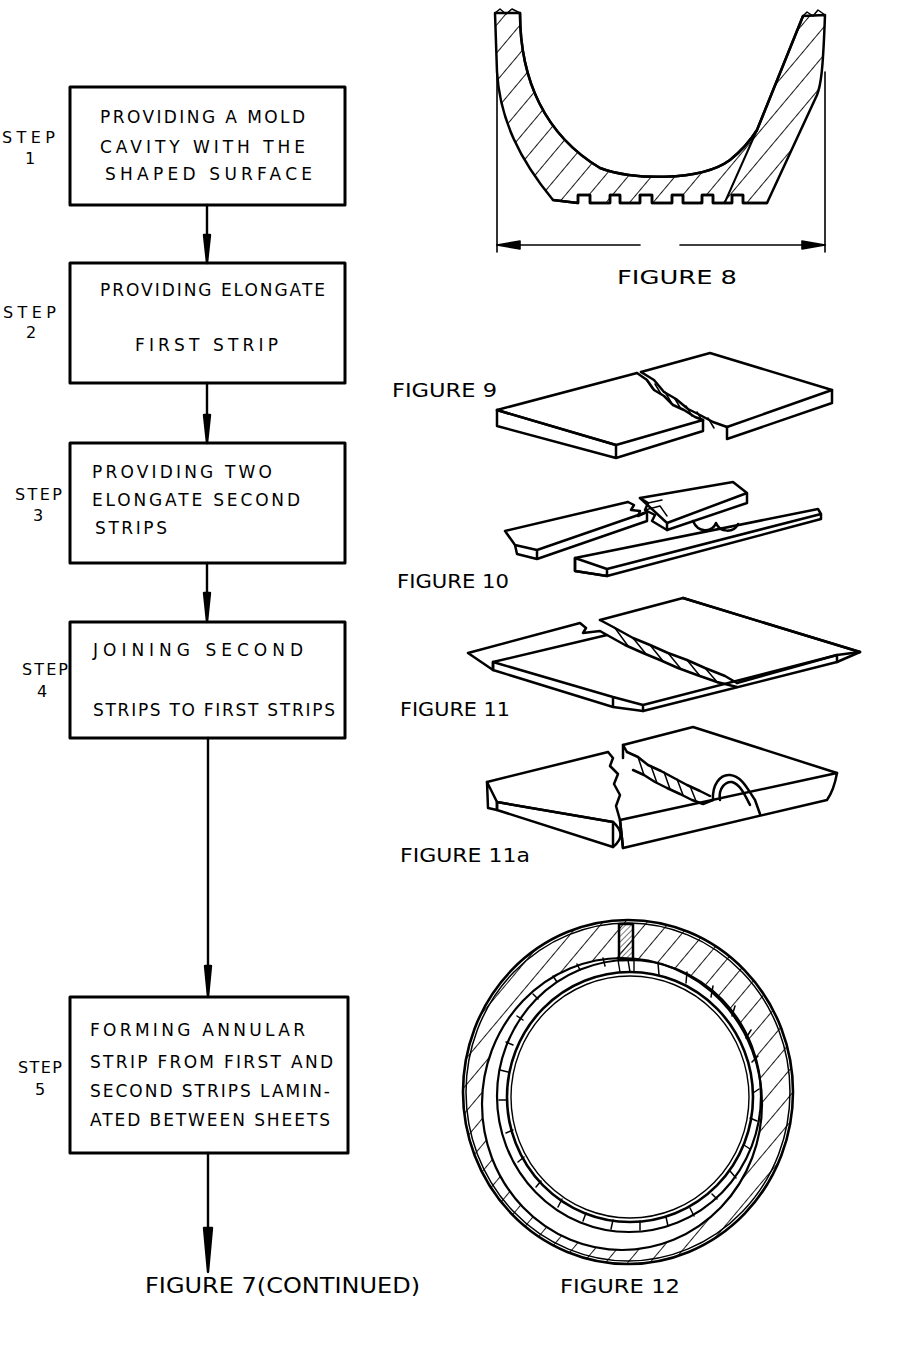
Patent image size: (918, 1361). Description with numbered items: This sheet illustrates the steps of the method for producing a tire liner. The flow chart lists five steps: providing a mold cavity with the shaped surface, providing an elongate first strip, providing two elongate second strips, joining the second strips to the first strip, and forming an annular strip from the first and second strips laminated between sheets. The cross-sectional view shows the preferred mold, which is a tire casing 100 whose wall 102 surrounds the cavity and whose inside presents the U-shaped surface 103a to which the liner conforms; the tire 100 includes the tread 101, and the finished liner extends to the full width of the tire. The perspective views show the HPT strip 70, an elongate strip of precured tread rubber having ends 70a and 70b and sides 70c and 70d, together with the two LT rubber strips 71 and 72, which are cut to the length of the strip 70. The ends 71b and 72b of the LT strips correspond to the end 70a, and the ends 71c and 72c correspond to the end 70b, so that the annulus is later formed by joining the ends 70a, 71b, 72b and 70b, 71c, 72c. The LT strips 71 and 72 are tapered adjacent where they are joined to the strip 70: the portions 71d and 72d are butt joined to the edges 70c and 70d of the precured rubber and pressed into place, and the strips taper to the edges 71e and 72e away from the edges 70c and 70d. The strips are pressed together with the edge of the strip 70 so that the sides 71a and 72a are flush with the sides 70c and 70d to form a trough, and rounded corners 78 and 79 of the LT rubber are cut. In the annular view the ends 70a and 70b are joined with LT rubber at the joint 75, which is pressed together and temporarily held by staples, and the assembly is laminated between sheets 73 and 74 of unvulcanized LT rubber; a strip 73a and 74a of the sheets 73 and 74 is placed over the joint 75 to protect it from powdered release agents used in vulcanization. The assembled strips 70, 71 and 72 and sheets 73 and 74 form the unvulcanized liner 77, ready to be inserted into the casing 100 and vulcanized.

In FIG. 8, the tire casing 100 is at (606, 135).
In FIG. 8, the tread 101 is at (565, 203).
In FIG. 8, the mold cavity wall 102 is at (557, 150).
In FIG. 8, the U-shaped surface 103a is at (757, 137).
In FIG. 9, the HPT strip 70 is at (661, 386).
In FIG. 11, the HPT strip 70 is at (642, 663).
In FIG. 11A, the HPT strip 70 is at (646, 807).
In FIG. 12, the HPT strip 70 is at (522, 986).
In FIG. 9, the end of strip 70a is at (548, 435).
In FIG. 11, the end of strip 70a is at (572, 688).
In FIG. 11A, the end of strip 70a is at (570, 835).
In FIG. 9, the end of strip 70b is at (777, 370).
In FIG. 11, the end of strip 70b is at (755, 618).
In FIG. 11A, the end of strip 70b is at (757, 768).
In FIG. 9, the side of strip 70c is at (523, 402).
In FIG. 9, the side of strip 70d is at (765, 413).
In FIG. 10, the LT strip 71 is at (652, 501).
In FIG. 11A, the side of LT strip 71a is at (683, 743).
In FIG. 10, the end of LT strip 71b is at (608, 487).
In FIG. 10, the end of LT strip 71c is at (725, 490).
In FIG. 11, the LT rubber strip portion 71d is at (682, 608).
In FIG. 11, the tapered edge 71e is at (510, 642).
In FIG. 10, the LT strip 72 is at (662, 529).
In FIG. 11A, the side of LT strip 72a is at (758, 797).
In FIG. 10, the end of LT strip 72b is at (505, 550).
In FIG. 10, the end of LT strip 72c is at (790, 510).
In FIG. 11, the LT rubber strip portion 72d is at (848, 665).
In FIG. 11, the tapered edge 72e is at (782, 680).
In FIG. 12, the sheet of unvulcanized LT rubber 73 is at (712, 952).
In FIG. 12, the strip of sheet 73a is at (626, 920).
In FIG. 12, the sheet of unvulcanized LT rubber 74 is at (760, 1000).
In FIG. 12, the strip of sheet 74a is at (615, 964).
In FIG. 12, the joint 75 is at (617, 931).
In FIG. 12, the unvulcanized liner 77 is at (662, 1075).
In FIG. 11A, the rounded corner 78 is at (624, 805).
In FIG. 11A, the rounded corner 79 is at (490, 815).